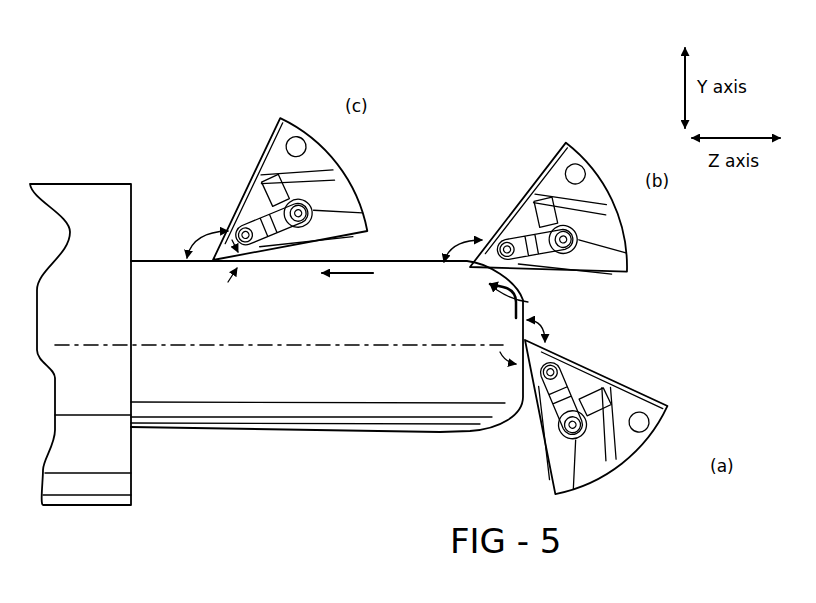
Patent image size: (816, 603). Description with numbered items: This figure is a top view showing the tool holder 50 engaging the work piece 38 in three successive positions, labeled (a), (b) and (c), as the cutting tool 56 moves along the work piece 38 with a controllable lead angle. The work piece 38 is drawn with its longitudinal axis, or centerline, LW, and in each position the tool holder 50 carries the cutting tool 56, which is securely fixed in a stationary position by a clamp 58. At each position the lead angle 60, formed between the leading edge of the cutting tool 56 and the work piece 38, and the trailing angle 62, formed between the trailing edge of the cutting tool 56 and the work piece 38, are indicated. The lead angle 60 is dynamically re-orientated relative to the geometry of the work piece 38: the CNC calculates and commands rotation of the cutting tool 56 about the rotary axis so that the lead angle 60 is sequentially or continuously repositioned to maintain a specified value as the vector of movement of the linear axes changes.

The work piece 38 is at (205, 404).
The longitudinal axis of the work piece LW is at (303, 346).
The tool holder 50 is at (352, 162).
The cutting tool 56 is at (229, 226).
The clamp 58 is at (316, 214).
The lead angle 60 is at (188, 250).
The trailing angle 62 is at (243, 262).